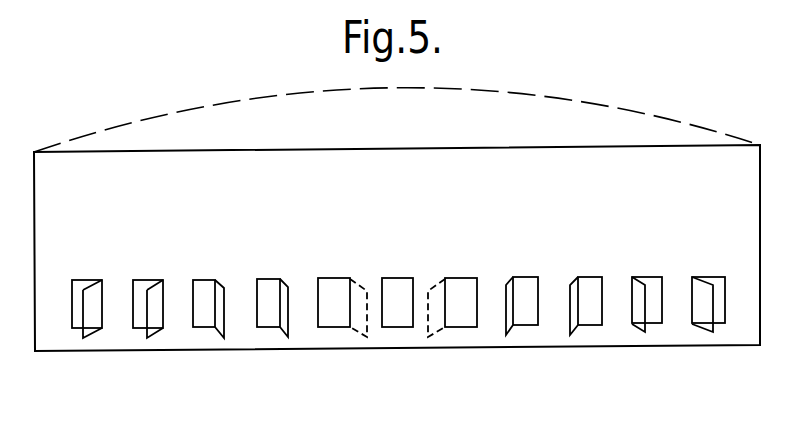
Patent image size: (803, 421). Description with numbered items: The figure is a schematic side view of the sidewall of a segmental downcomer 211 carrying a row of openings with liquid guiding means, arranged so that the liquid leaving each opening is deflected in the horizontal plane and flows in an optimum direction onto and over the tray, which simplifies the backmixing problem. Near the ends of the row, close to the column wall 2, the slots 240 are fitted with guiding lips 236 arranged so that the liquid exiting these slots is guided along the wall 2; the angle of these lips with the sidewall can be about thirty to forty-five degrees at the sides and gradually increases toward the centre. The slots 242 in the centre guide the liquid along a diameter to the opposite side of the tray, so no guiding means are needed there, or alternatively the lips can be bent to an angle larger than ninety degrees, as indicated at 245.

The column wall 2 is at (591, 101).
The segmental downcomer 211 is at (741, 323).
The slots 240 is at (152, 279).
The guiding lips 236 is at (153, 337).
The slots 242 is at (462, 278).
The lips bent to an angle larger than 90 degrees 245 is at (435, 334).